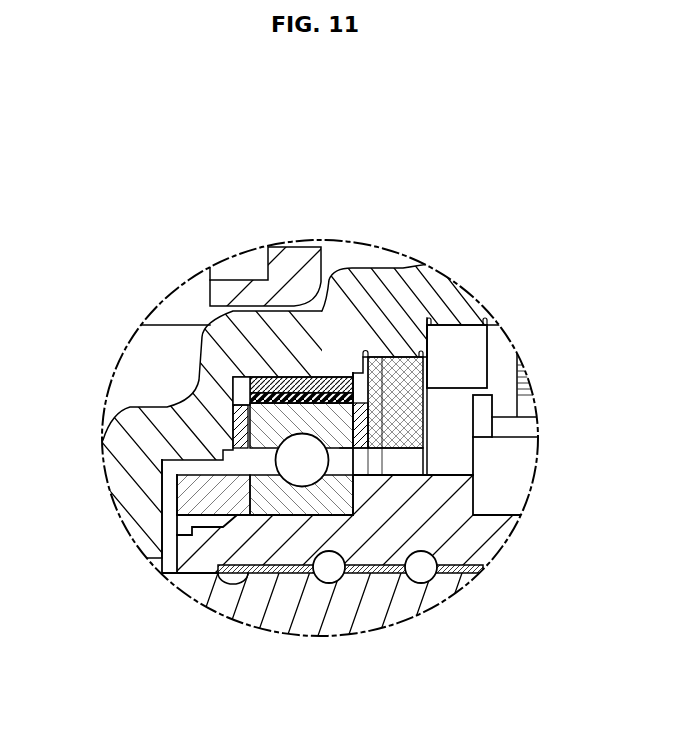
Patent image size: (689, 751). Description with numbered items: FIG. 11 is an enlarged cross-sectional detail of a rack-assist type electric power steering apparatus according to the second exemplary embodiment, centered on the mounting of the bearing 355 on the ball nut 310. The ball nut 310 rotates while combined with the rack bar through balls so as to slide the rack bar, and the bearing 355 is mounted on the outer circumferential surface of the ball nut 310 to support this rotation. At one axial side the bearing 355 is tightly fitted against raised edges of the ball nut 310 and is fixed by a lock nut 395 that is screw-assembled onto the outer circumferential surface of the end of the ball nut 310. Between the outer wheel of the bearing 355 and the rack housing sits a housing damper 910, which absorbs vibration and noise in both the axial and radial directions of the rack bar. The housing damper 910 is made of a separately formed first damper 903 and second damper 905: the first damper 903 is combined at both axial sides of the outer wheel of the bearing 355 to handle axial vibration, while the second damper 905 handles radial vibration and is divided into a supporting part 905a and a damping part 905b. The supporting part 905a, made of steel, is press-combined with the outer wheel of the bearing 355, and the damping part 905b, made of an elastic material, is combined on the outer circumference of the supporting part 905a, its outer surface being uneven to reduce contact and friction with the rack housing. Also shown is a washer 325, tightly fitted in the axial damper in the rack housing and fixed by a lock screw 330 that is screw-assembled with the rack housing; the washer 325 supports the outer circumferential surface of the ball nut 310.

The housing damper 910 is at (157, 117).
The first damper 903 is at (208, 325).
The second damper 905 is at (312, 170).
The supporting part 905a is at (240, 410).
The damping part 905b is at (333, 378).
The washer 325 is at (402, 367).
The lock screw 330 is at (373, 365).
The lock nut 395 is at (193, 495).
The bearing 355 is at (281, 500).
The ball nut 310 is at (478, 537).